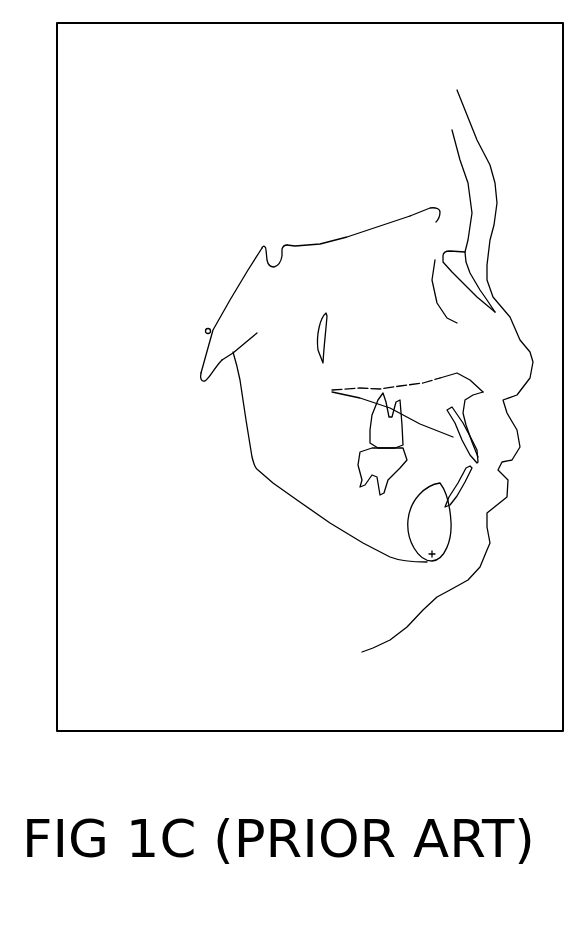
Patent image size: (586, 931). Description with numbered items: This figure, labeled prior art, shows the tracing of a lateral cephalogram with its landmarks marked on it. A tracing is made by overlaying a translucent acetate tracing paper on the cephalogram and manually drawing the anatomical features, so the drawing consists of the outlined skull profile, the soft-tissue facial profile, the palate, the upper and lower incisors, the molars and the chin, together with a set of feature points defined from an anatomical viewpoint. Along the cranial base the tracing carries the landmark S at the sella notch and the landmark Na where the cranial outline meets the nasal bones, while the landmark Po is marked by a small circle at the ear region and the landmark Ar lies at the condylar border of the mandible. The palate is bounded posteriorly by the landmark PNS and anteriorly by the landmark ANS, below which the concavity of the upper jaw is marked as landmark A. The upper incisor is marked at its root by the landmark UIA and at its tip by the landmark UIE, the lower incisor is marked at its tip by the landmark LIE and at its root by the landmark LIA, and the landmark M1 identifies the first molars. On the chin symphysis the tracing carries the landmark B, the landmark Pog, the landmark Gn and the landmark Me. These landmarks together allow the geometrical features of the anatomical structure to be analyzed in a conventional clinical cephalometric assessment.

The landmark S is at (274, 266).
The landmark Na is at (435, 228).
The landmark Po is at (200, 321).
The articulare point Ar is at (239, 350).
The landmark PNS is at (371, 407).
The landmark ANS is at (479, 385).
The landmark A is at (472, 424).
The landmark UIA is at (450, 428).
The landmark LIE is at (456, 438).
The landmark UIE is at (459, 497).
The landmark LIA is at (444, 497).
The landmark M1 is at (395, 444).
The landmark B is at (444, 532).
The landmark Pog is at (444, 532).
The landmark Gn is at (438, 532).
The landmark Me is at (429, 532).